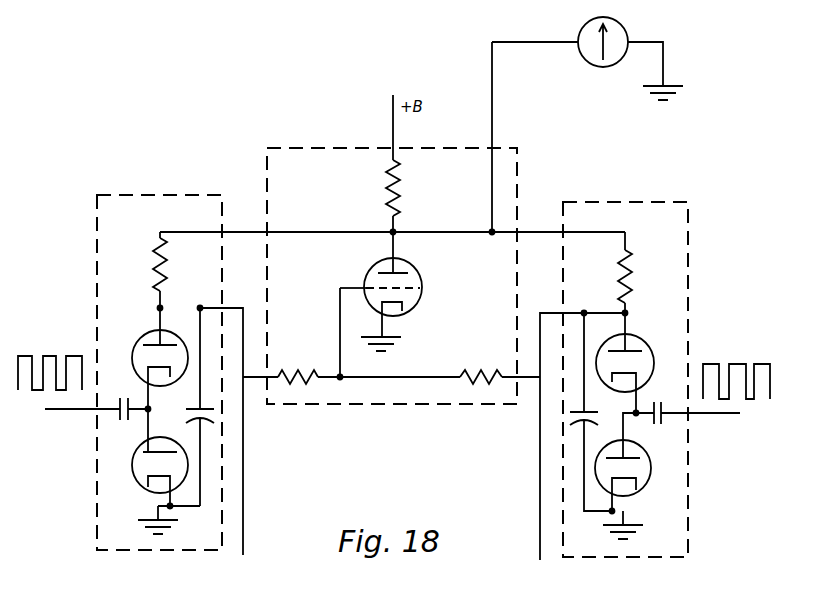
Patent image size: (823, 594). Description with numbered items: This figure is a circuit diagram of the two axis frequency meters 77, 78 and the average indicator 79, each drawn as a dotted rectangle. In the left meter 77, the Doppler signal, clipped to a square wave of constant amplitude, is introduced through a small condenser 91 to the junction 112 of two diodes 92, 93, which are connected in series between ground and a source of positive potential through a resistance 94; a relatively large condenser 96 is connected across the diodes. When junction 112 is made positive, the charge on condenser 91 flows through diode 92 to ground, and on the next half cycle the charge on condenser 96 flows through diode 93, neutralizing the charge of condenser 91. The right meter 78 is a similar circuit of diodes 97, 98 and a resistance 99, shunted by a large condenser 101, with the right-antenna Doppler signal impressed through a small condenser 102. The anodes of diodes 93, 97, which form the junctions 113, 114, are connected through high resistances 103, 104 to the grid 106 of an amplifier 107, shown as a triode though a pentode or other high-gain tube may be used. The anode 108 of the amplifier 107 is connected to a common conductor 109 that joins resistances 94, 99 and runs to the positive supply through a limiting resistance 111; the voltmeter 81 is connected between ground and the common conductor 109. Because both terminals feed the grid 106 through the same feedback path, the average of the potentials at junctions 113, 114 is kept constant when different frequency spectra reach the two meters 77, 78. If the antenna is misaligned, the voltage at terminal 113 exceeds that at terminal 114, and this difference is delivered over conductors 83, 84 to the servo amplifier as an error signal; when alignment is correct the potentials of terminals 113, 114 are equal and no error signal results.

The axis frequency meter 77 is at (174, 180).
The axis frequency meter 78 is at (645, 203).
The average indicator 79 is at (310, 148).
The voltmeter 81 is at (622, 27).
The conductor 83 is at (243, 533).
The conductor 84 is at (540, 541).
The condenser 91 is at (120, 405).
The diode 92 is at (142, 489).
The diode 93 is at (138, 343).
The resistance 94 is at (157, 278).
The condenser 96 is at (196, 408).
The diode 97 is at (650, 362).
The diode 98 is at (650, 481).
The resistance 99 is at (635, 280).
The condenser 101 is at (611, 405).
The condenser 102 is at (658, 404).
The high resistance 103 is at (285, 375).
The high resistance 104 is at (465, 375).
The grid 106 is at (420, 290).
The amplifier 107 is at (412, 308).
The anode 108 is at (408, 272).
The common conductor 109 is at (310, 232).
The limiting resistance 111 is at (400, 208).
The junction 112 is at (146, 414).
The junction 113 is at (158, 308).
The terminal 114 is at (627, 315).